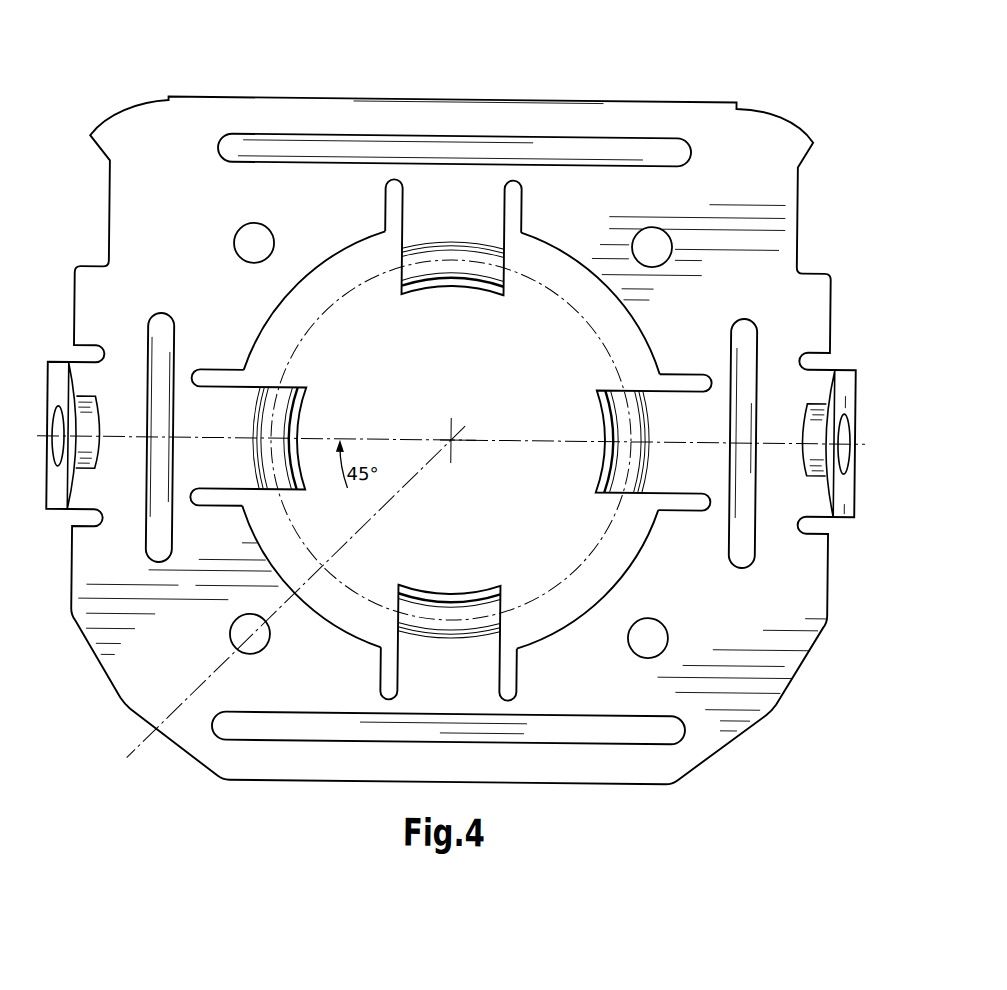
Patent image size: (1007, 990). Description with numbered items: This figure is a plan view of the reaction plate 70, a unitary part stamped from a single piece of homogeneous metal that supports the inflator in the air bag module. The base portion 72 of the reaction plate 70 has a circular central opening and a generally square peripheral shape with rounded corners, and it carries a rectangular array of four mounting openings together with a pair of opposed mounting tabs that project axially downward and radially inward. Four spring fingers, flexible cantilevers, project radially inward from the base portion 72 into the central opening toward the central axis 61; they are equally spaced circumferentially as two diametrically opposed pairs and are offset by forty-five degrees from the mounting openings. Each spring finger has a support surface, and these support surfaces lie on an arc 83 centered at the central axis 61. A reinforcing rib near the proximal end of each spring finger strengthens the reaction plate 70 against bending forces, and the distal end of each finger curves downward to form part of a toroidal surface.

The reaction plate 70 is at (660, 70).
The base portion 72 is at (178, 236).
The arc 83 is at (338, 298).
The central axis 61 is at (453, 438).